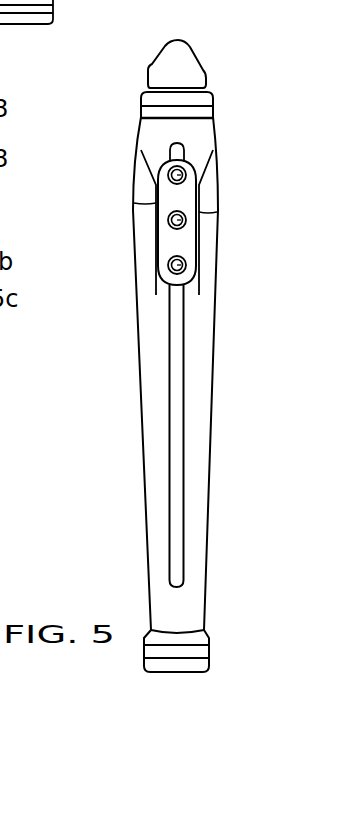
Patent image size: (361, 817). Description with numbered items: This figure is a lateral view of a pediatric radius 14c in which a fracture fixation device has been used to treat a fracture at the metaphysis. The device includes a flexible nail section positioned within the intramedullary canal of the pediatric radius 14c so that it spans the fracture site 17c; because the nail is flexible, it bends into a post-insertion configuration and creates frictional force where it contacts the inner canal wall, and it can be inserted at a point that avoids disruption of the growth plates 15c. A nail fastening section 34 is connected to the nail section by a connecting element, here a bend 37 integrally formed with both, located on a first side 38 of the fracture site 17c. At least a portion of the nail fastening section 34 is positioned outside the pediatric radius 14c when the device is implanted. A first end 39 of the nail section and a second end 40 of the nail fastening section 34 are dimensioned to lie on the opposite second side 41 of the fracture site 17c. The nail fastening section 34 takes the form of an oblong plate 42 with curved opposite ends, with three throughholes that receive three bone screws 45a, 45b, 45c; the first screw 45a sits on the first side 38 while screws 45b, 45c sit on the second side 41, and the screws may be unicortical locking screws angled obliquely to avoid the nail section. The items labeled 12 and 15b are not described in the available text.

The knob 12 is at (182, 60).
The pediatric radius 14c is at (186, 595).
The end cap 15b is at (55, 7).
The growth plates 15c is at (216, 110).
The fracture site 17c is at (237, 213).
The nail fastening section 34 is at (152, 281).
The bend 37 is at (172, 156).
The first side 38 is at (124, 130).
The first end 39 is at (177, 570).
The second end 40 is at (200, 296).
The second side 41 is at (122, 280).
The oblong plate 42 is at (164, 290).
The bone screw 45a is at (169, 170).
The bone screw 45b is at (168, 220).
The bone screw 45c is at (168, 262).